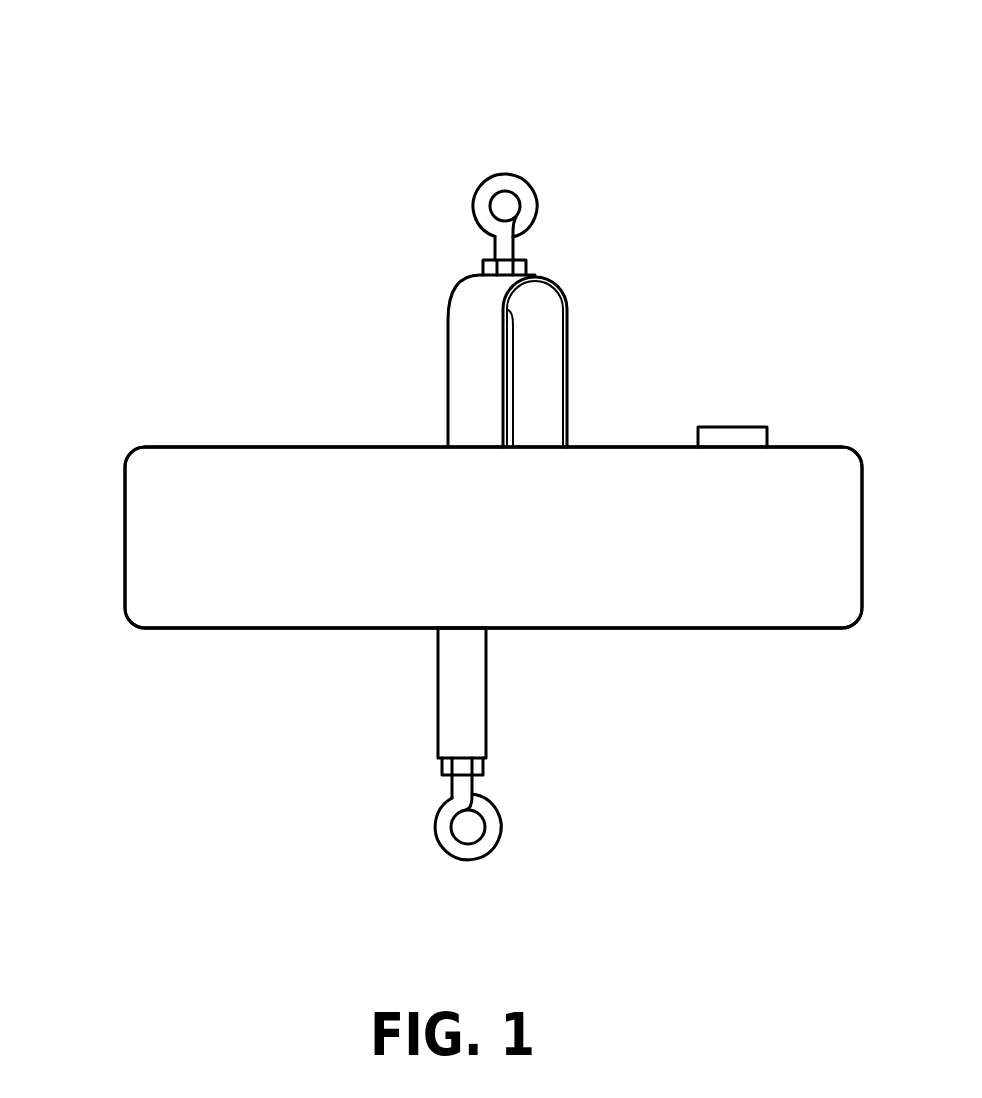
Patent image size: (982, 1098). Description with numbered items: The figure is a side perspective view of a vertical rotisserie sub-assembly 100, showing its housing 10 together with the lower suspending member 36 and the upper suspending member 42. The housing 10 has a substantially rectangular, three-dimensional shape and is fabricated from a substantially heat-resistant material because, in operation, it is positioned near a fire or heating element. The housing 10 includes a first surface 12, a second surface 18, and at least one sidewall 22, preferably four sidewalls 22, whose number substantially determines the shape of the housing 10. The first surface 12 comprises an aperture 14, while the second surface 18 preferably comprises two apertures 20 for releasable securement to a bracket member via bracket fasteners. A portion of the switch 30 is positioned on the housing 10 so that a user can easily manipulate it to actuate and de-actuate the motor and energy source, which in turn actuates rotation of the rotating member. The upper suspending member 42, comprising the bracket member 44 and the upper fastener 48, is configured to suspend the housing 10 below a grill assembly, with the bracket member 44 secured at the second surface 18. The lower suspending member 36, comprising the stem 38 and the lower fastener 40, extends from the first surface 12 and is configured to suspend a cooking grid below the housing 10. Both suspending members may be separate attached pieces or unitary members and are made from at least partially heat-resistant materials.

The vertical rotisserie sub-assembly 100 is at (198, 128).
The housing 10 is at (123, 488).
The first surface 12 is at (180, 630).
The aperture 14 is at (465, 630).
The second surface 18 is at (203, 447).
The apertures 20 is at (480, 447).
The sidewall 22 is at (158, 568).
The switch 30 is at (725, 427).
The lower suspending member 36 is at (565, 742).
The stem 38 is at (486, 678).
The lower fastener 40 is at (502, 825).
The upper suspending member 42 is at (611, 210).
The bracket member 44 is at (470, 310).
The upper fastener 48 is at (528, 190).